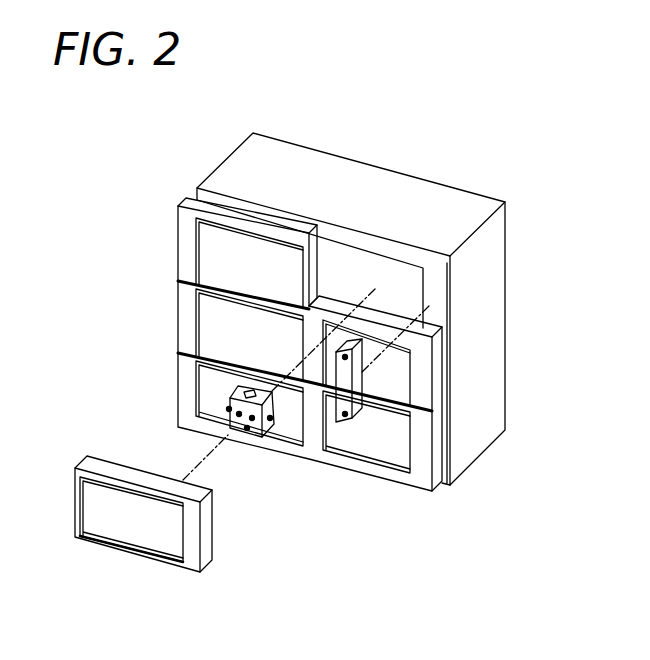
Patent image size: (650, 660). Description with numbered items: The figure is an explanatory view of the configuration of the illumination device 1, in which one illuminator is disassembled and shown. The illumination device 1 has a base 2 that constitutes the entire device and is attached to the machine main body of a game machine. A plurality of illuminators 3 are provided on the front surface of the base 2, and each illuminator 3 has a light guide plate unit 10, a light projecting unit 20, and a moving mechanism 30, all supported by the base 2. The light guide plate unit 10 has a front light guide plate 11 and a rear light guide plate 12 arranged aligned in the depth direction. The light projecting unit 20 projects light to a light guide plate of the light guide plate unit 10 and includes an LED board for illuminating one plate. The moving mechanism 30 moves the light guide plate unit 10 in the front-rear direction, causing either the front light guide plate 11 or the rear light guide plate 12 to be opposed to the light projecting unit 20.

The illumination device 1 is at (500, 144).
The base 2 is at (384, 179).
The illuminator 3 is at (220, 330).
The light guide plate unit 10 is at (103, 523).
The front light guide plate 11 is at (140, 528).
The rear light guide plate 12 is at (162, 537).
The light projecting unit 20 is at (337, 418).
The moving mechanism 30 is at (228, 408).